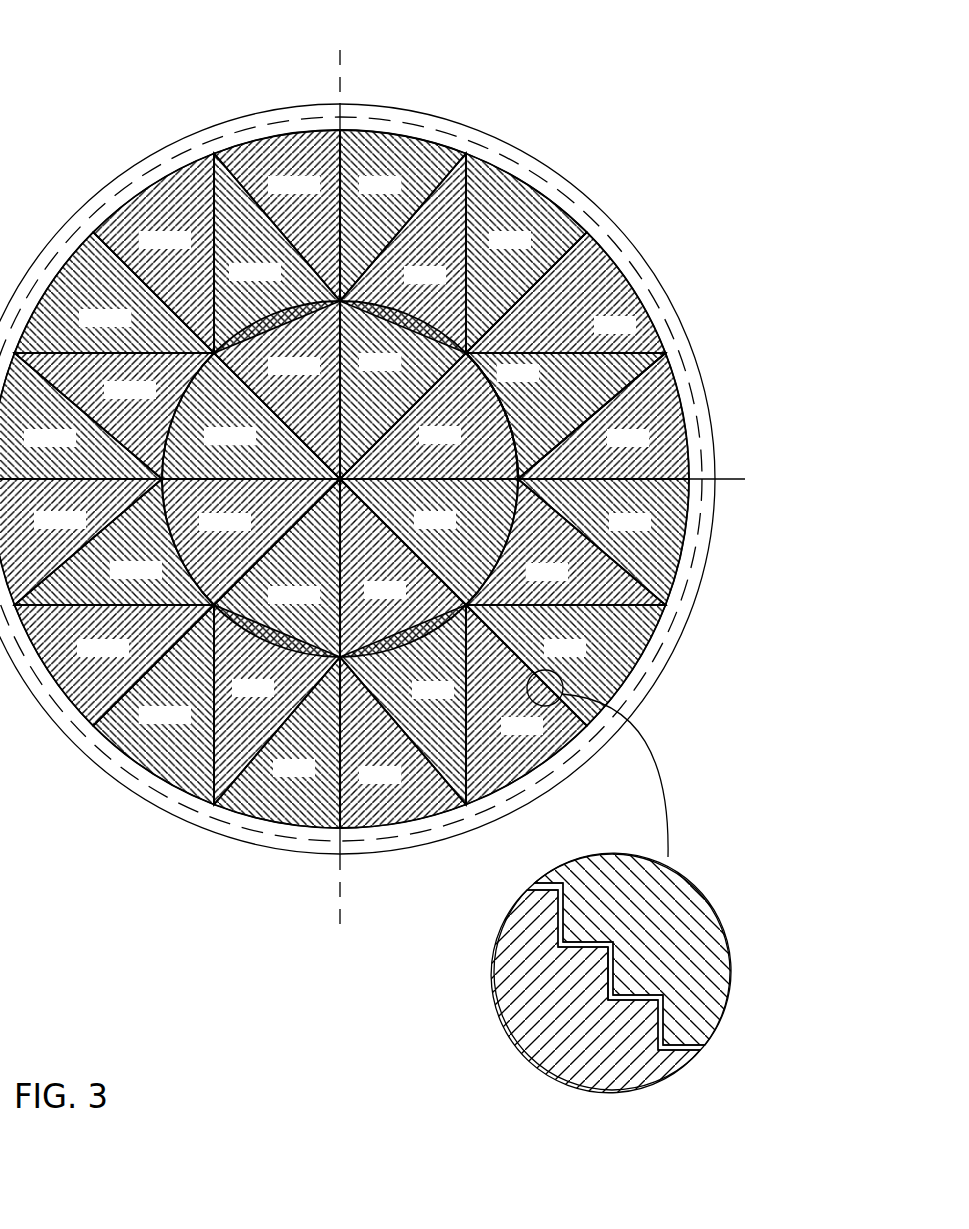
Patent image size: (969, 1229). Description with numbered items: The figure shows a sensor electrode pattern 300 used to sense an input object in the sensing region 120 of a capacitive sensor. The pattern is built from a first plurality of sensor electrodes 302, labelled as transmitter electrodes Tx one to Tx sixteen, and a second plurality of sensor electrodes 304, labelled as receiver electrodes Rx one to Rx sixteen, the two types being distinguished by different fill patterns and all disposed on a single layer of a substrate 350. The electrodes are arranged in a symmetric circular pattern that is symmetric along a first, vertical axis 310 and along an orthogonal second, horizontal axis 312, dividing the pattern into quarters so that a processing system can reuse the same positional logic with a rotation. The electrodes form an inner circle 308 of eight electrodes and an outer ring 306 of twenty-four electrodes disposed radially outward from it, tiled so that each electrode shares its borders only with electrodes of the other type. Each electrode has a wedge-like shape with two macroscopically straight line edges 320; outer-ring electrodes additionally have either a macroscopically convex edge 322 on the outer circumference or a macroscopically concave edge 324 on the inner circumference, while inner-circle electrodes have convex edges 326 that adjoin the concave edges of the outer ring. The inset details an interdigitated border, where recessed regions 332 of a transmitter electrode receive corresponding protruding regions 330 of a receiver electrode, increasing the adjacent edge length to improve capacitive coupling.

The sensor electrode pattern 300 is at (143, 76).
The sensing region 120 is at (415, 123).
The substrate 350 is at (493, 135).
The first plurality of sensor electrodes 302 is at (525, 182).
The second plurality of sensor electrodes 304 is at (625, 262).
The outer ring 306 is at (662, 400).
The inner circle 308 is at (483, 452).
The first (vertical) axis 310 is at (340, 927).
The second (horizontal) axis 312 is at (738, 487).
The macroscopically straight line edges 320 is at (517, 345).
The macroscopically convex edge 322 is at (636, 303).
The macroscopically concave edge 324 is at (513, 440).
The convex edges 326 is at (498, 408).
The protruding regions 330 is at (670, 993).
The recessed regions 332 is at (600, 957).